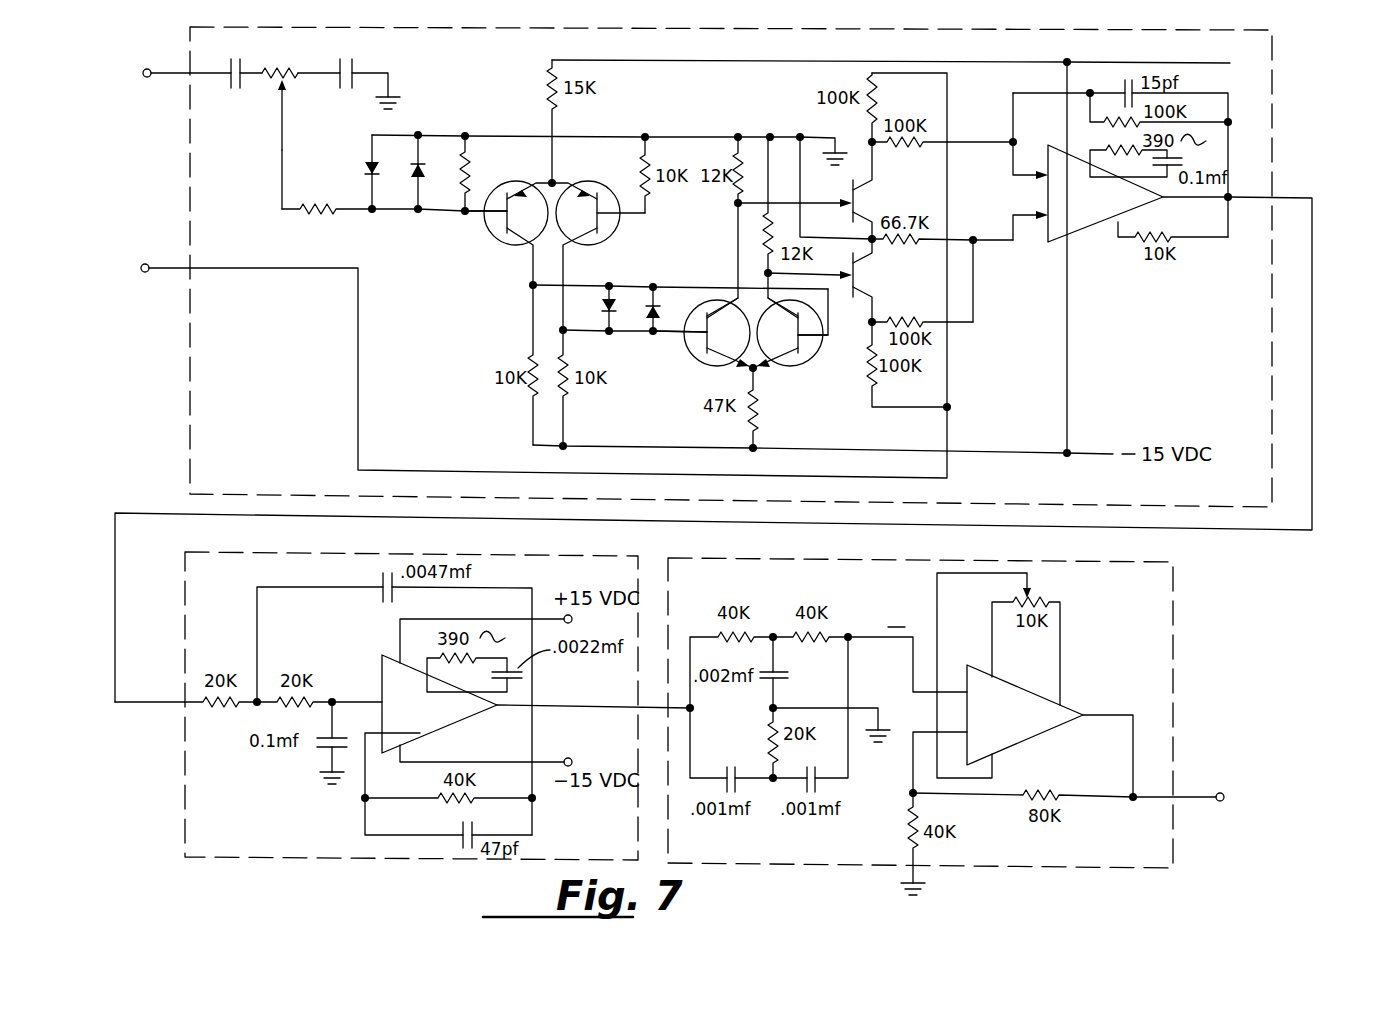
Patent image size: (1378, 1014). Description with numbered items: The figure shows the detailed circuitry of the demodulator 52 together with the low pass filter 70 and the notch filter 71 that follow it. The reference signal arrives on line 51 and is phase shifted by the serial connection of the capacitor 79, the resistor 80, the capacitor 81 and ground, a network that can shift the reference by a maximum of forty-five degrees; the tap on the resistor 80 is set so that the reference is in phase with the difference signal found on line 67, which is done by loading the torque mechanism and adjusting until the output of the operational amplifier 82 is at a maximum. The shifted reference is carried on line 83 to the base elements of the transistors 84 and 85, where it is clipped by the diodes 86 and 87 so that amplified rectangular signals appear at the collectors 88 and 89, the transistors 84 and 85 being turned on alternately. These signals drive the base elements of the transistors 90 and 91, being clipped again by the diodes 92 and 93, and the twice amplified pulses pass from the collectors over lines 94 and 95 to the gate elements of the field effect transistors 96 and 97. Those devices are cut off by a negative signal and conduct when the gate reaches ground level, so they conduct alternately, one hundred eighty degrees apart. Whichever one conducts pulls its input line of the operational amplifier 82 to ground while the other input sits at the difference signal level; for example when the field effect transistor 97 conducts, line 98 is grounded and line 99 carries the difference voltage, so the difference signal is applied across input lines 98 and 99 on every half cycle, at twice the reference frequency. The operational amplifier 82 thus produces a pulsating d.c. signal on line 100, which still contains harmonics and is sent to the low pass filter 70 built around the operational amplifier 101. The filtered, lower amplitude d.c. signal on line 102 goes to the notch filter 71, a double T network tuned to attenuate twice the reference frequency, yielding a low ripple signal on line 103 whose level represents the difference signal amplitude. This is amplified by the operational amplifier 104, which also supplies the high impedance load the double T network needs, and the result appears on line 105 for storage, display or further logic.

The reference signal line 51 is at (177, 75).
The demodulator circuit 52 is at (1276, 134).
The difference signal line 67 is at (176, 271).
The low pass filter 70 is at (185, 788).
The notch filter 71 is at (1175, 651).
The capacitor 79 is at (230, 62).
The resistor 80 is at (281, 67).
The capacitor 81 is at (354, 69).
The operational amplifier 82 is at (1093, 216).
The line 83 is at (282, 150).
The transistor 84 is at (498, 226).
The transistor 85 is at (610, 229).
The diode 86 is at (366, 170).
The diode 87 is at (412, 170).
The collector 88 is at (530, 303).
The collector 89 is at (564, 303).
The transistor 90 is at (700, 347).
The transistor 91 is at (807, 348).
The diode 92 is at (602, 316).
The diode 93 is at (660, 304).
The line 94 is at (824, 190).
The line 95 is at (828, 289).
The field effect transistor 96 is at (867, 203).
The field effect transistor 97 is at (866, 270).
The input line 98 is at (1007, 250).
The input line 99 is at (980, 142).
The line 100 is at (1262, 200).
The operational amplifier 101 is at (392, 677).
The line 102 is at (598, 704).
The line 103 is at (870, 637).
The operational amplifier 104 is at (1012, 735).
The line 105 is at (1193, 797).